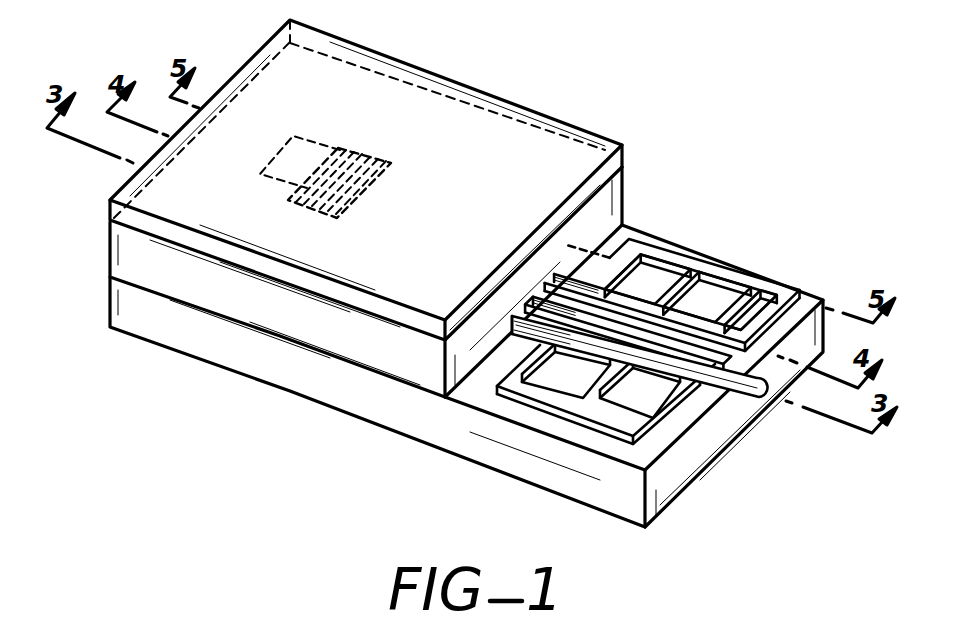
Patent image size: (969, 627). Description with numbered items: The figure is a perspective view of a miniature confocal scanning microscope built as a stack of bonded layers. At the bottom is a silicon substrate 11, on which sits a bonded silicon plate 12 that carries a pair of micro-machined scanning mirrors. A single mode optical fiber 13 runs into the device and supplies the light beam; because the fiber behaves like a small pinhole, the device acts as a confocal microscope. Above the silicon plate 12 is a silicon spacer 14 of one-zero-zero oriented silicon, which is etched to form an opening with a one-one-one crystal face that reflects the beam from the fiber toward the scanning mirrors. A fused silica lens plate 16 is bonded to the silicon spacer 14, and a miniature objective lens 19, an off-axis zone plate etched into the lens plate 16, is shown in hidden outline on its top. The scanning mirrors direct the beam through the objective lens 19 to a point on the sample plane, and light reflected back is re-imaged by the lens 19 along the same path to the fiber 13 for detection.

The silicon substrate 11 is at (203, 337).
The bonded silicon plate 12 is at (549, 425).
The single mode optical fiber 13 is at (667, 350).
The silicon spacer 14 is at (380, 353).
The fused silica lens plate 16 is at (557, 150).
The miniature objective lens 19 is at (363, 147).